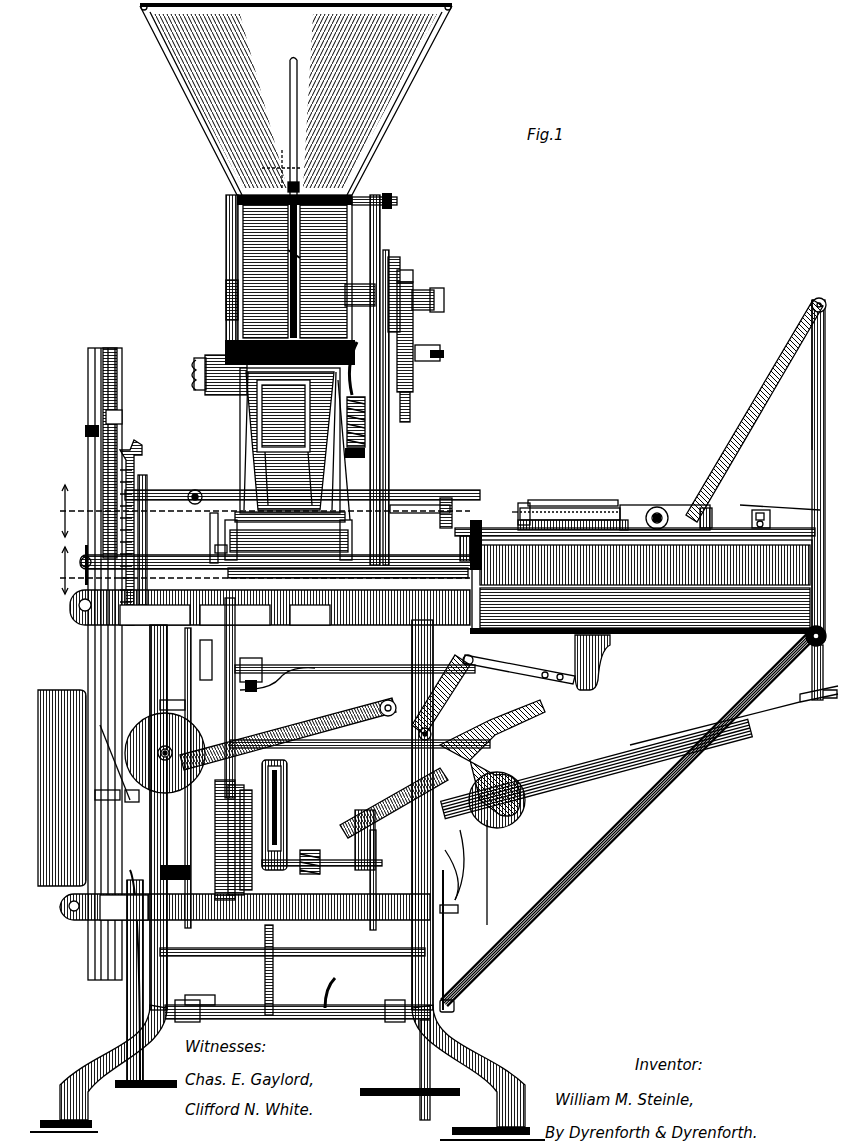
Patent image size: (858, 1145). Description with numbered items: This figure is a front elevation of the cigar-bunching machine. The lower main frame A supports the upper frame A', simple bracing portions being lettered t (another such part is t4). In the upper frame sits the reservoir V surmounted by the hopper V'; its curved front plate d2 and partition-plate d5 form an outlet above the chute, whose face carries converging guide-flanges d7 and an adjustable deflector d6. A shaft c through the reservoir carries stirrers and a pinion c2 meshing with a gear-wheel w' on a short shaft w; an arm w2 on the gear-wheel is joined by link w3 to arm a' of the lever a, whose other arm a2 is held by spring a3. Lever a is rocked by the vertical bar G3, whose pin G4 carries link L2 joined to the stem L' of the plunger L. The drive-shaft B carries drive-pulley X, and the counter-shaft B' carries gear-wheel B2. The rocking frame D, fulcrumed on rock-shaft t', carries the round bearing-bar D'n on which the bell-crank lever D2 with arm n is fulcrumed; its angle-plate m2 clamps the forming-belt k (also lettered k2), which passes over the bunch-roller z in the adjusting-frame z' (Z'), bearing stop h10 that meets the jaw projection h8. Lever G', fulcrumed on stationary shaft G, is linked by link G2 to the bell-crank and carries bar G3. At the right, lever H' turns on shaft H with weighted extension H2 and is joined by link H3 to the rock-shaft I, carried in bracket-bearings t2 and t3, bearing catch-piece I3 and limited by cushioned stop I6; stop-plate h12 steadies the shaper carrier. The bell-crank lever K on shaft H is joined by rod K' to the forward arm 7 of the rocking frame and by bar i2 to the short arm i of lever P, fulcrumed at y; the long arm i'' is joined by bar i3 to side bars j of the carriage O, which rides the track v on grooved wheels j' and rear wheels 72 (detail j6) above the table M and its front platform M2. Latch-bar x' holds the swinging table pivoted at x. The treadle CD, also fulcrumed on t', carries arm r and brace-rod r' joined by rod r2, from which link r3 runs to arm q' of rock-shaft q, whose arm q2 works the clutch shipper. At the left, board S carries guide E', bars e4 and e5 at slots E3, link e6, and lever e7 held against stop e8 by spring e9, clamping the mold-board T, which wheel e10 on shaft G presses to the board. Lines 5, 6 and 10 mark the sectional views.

The hopper V' is at (296, 99).
The agitator rod L' is at (277, 127).
The section line 6 is at (281, 167).
The feed box V is at (290, 280).
The shaft G4 is at (365, 198).
The plunger L2 is at (288, 250).
The guide d2 is at (290, 258).
The upper frame A' is at (208, 270).
The frame bar a' is at (398, 380).
The shaft c is at (444, 296).
The pinion c2 is at (402, 285).
The collar w3 is at (415, 287).
The gear wheel w2 is at (413, 332).
The nut w is at (437, 354).
The gear w' is at (428, 401).
The link a2 is at (357, 362).
The spring a3 is at (366, 420).
The bracket G3 is at (370, 446).
The wing block a is at (182, 375).
The mold L is at (290, 440).
The mold frame d5 is at (298, 460).
The mold guide d6 is at (318, 470).
The mold plate d7 is at (255, 510).
The plate m2 is at (288, 540).
The post Z' is at (199, 537).
The nut h10 is at (215, 548).
The rod z' is at (355, 450).
The bar z is at (348, 577).
The lever v is at (421, 522).
The section line h8 is at (225, 572).
The standard S is at (88, 400).
The slide e7 is at (103, 450).
The block e8 is at (110, 432).
The stop e5 is at (92, 430).
The rack e9 is at (136, 470).
The shaft t is at (302, 537).
The pivot t4 is at (192, 492).
The section line 5 is at (59, 511).
The section line 10 is at (56, 570).
The bar x' is at (65, 559).
The table bar T is at (125, 565).
The frame member E3 is at (130, 658).
The rod h12 is at (205, 628).
The rod t2 is at (268, 636).
The bar I is at (315, 670).
The link I3 is at (262, 690).
The disc G' is at (201, 745).
The lever D is at (288, 726).
The shaft G2 is at (275, 748).
The pivot e10 is at (180, 736).
The block t3 is at (185, 705).
The rod e6 is at (100, 725).
The wheel X is at (62, 788).
The arm e4 is at (95, 796).
The block G is at (132, 799).
The gear B is at (216, 840).
The gear B' is at (218, 840).
The slide frame D2 is at (285, 815).
The spring D'n is at (322, 852).
The block E' is at (150, 972).
The cross bar B2 is at (225, 912).
The rod n is at (300, 910).
The main frame A is at (287, 1058).
The collar t' is at (198, 989).
The shaft CD is at (290, 1005).
The section line 7 is at (335, 985).
The leg q2 is at (127, 1068).
The leg q is at (410, 1071).
The rod q' is at (479, 941).
The post K is at (394, 815).
The block K' is at (374, 840).
The rod r is at (382, 880).
The link r2 is at (464, 830).
The rod r3 is at (490, 862).
The link r' is at (458, 875).
The pivot H is at (449, 737).
The lever arm H' is at (456, 695).
The link H3 is at (515, 668).
The bracket I6 is at (600, 665).
The lever arm H2 is at (505, 770).
The table M is at (642, 594).
The table body M2 is at (642, 586).
The rail x is at (635, 529).
The rack k is at (554, 508).
The bar k2 is at (578, 502).
The stop j6 is at (515, 515).
The slide j is at (666, 504).
The roller j' is at (657, 502).
The guide O is at (729, 479).
The section line 72 is at (770, 528).
The post P is at (812, 453).
The rod i'' is at (798, 375).
The brace i3 is at (752, 415).
The pivot y is at (824, 630).
The rod i is at (628, 820).
The rod i2 is at (620, 750).